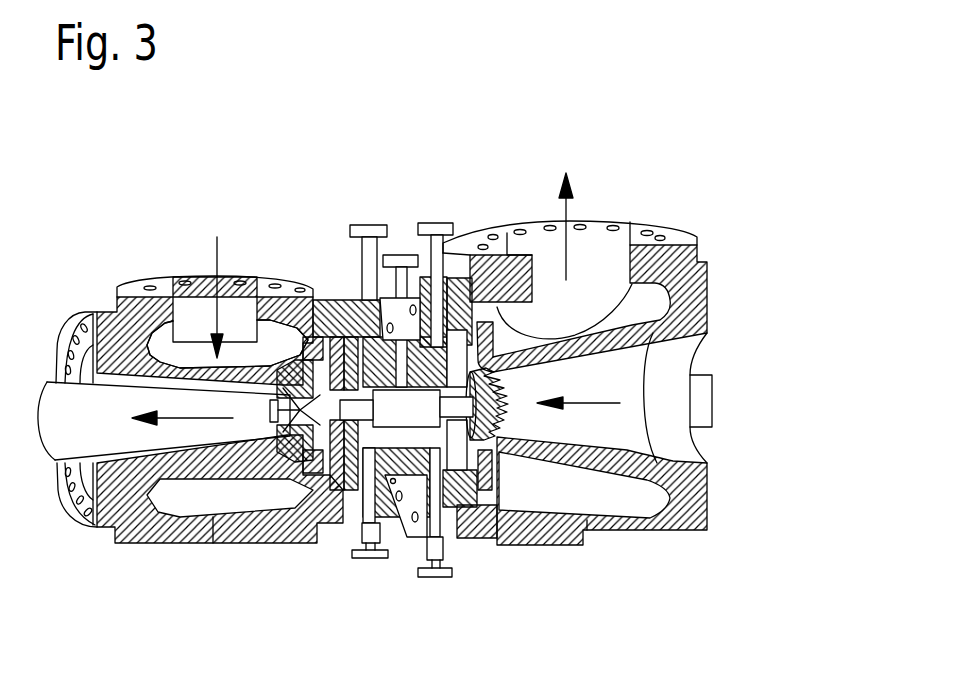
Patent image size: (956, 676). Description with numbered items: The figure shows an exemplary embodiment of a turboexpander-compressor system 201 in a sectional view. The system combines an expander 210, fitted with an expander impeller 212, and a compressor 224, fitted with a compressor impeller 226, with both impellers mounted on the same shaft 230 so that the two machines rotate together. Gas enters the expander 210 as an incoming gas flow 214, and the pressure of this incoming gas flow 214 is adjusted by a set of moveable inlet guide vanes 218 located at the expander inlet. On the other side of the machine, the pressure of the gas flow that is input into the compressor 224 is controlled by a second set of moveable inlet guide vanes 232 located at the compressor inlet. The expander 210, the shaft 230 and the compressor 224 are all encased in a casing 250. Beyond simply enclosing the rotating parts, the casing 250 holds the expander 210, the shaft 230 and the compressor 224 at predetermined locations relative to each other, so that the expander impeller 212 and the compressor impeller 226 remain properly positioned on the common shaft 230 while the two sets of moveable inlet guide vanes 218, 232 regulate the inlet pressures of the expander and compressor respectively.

The turboexpander-compressor system 201 is at (398, 119).
The expander 210 is at (288, 542).
The expander impeller 212 is at (337, 320).
The incoming gas flow 214 is at (214, 263).
The set of moveable inlet guide vanes 218 is at (183, 328).
The compressor 224 is at (660, 530).
The compressor impeller 226 is at (493, 543).
The shaft 230 is at (402, 410).
The set of moveable inlet guide vanes 232 is at (697, 385).
The casing 250 is at (387, 478).